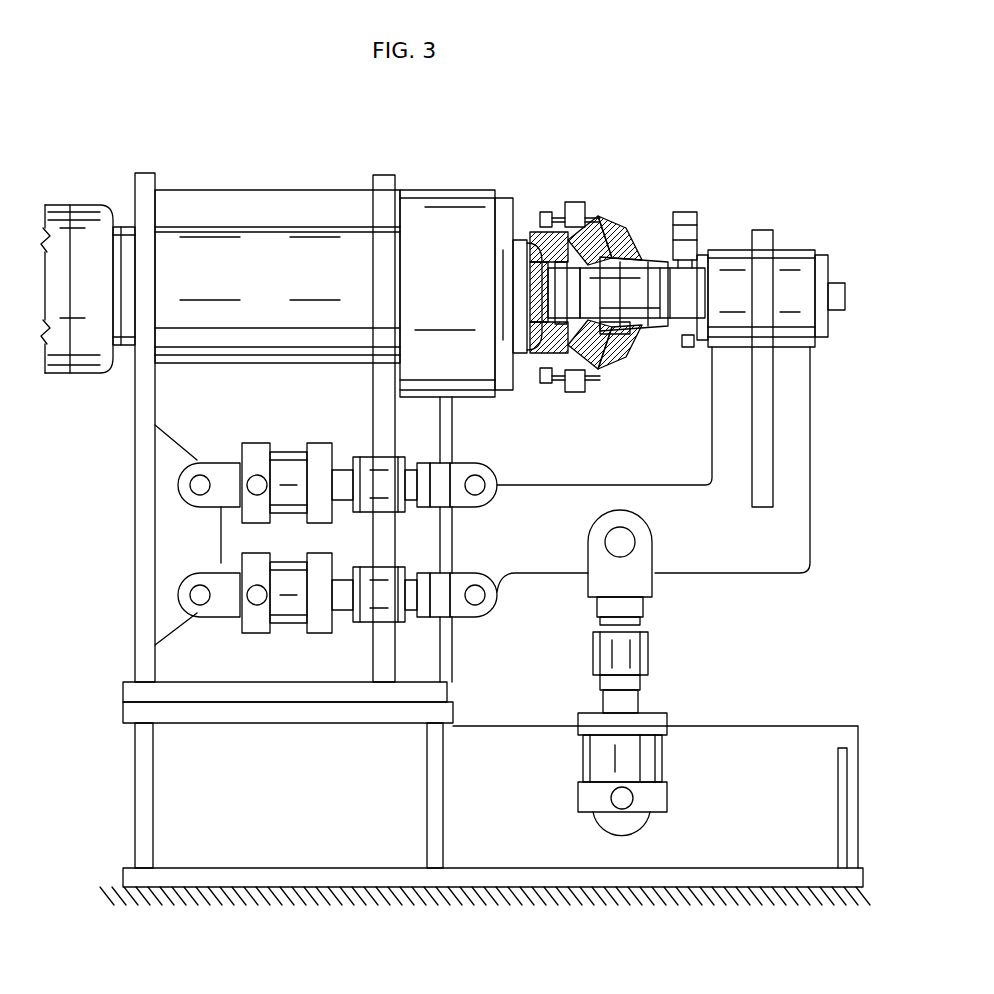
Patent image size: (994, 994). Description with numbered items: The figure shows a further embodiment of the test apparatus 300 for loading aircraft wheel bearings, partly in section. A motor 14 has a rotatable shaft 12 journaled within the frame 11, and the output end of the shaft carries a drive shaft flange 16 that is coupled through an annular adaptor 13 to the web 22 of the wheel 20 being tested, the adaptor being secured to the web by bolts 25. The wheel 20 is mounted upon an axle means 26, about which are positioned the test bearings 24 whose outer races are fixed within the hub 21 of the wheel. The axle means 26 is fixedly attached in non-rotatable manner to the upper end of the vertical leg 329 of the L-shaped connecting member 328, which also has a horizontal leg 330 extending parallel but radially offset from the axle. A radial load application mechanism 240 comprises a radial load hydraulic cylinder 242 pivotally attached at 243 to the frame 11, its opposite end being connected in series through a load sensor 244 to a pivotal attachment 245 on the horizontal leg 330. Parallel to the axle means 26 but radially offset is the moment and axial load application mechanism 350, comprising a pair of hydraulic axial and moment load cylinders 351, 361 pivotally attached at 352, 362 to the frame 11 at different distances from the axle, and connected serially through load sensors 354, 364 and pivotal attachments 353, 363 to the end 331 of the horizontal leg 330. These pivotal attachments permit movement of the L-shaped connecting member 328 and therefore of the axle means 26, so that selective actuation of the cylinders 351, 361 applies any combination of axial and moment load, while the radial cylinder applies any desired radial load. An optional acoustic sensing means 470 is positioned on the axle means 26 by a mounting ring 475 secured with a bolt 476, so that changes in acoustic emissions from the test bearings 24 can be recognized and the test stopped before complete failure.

The frame 11 is at (419, 183).
The rotatable shaft 12 is at (535, 298).
The annular adaptor 13 is at (576, 208).
The motor 14 is at (60, 218).
The drive shaft flange 16 is at (533, 238).
The wheel 20 is at (629, 268).
The hub 21 is at (638, 252).
The web 22 is at (614, 212).
The test bearings 24 is at (612, 338).
The bolts 25 is at (541, 214).
The axle means 26 is at (701, 256).
The test apparatus 300 is at (673, 117).
The L-shaped connecting member 328 is at (812, 448).
The vertical leg 329 is at (818, 370).
The horizontal leg 330 is at (662, 490).
The end of horizontal leg 331 is at (487, 522).
The moment and axial load application mechanism 350 is at (323, 528).
The hydraulic axial and moment load cylinder 351 is at (288, 462).
The pivotal attachment 352 is at (195, 485).
The pivotal attachment 353 is at (479, 484).
The load sensor 354 is at (381, 468).
The hydraulic axial and moment load cylinder 361 is at (290, 620).
The pivotal attachment 362 is at (195, 603).
The pivotal attachment 363 is at (478, 605).
The load sensor 364 is at (366, 618).
The acoustic sensing means 470 is at (690, 208).
The mounting ring 475 is at (707, 284).
The bolt 476 is at (688, 348).
The radial load application mechanism 240 is at (680, 676).
The radial load hydraulic cylinder 242 is at (650, 763).
The pivotal attachment 243 is at (624, 802).
The load sensor 244 is at (637, 660).
The pivotal attachment 245 is at (632, 546).